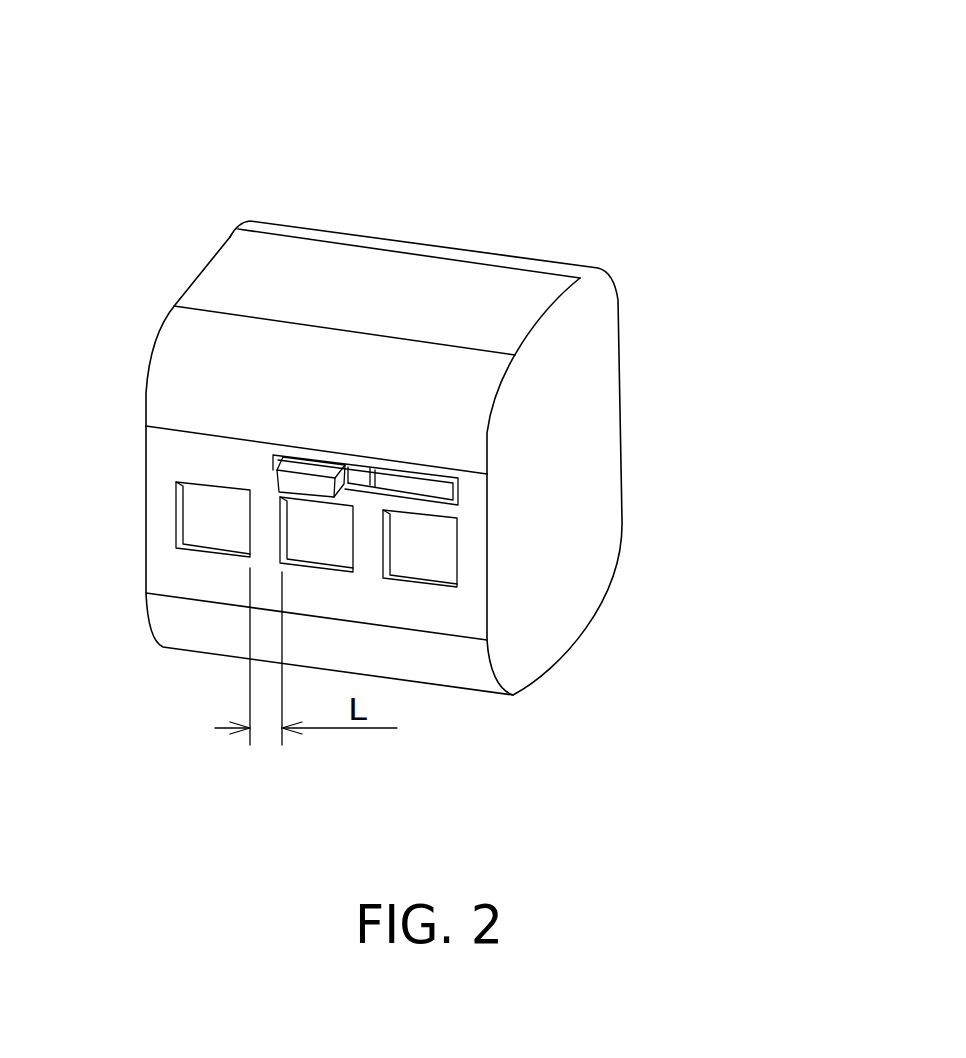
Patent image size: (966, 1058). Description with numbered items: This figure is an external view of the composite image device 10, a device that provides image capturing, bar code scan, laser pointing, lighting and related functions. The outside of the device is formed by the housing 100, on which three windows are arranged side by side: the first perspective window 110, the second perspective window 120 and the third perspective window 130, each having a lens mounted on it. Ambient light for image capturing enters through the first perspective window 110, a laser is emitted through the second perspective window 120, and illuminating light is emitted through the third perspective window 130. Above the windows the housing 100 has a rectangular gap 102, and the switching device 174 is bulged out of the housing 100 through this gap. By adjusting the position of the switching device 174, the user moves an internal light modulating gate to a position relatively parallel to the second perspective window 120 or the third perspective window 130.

The composite image device 10 is at (812, 158).
The housing 100 is at (595, 348).
The rectangular gap 102 is at (457, 492).
The first perspective window 110 is at (176, 514).
The second perspective window 120 is at (318, 572).
The third perspective window 130 is at (457, 565).
The switching device 174 is at (308, 463).